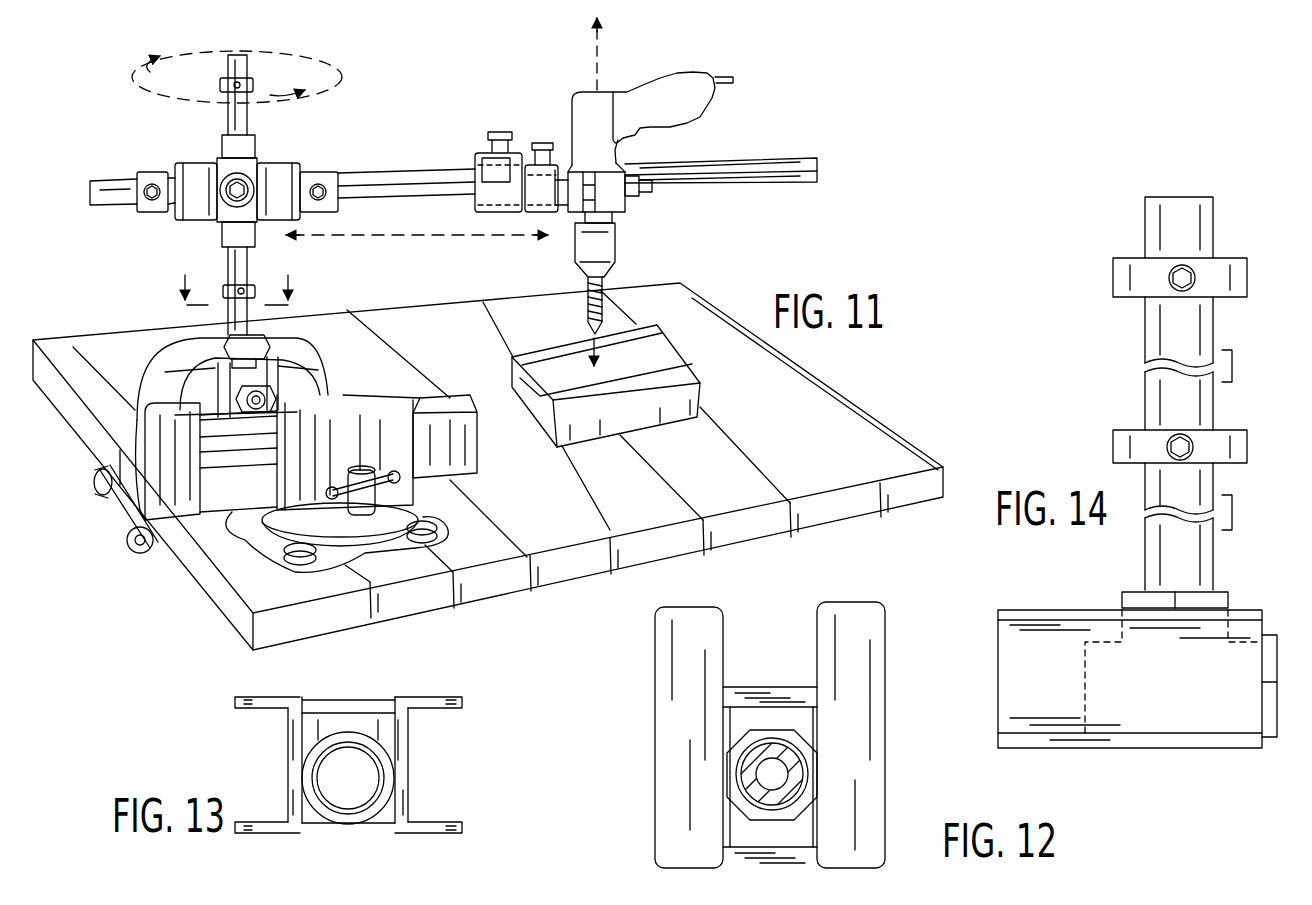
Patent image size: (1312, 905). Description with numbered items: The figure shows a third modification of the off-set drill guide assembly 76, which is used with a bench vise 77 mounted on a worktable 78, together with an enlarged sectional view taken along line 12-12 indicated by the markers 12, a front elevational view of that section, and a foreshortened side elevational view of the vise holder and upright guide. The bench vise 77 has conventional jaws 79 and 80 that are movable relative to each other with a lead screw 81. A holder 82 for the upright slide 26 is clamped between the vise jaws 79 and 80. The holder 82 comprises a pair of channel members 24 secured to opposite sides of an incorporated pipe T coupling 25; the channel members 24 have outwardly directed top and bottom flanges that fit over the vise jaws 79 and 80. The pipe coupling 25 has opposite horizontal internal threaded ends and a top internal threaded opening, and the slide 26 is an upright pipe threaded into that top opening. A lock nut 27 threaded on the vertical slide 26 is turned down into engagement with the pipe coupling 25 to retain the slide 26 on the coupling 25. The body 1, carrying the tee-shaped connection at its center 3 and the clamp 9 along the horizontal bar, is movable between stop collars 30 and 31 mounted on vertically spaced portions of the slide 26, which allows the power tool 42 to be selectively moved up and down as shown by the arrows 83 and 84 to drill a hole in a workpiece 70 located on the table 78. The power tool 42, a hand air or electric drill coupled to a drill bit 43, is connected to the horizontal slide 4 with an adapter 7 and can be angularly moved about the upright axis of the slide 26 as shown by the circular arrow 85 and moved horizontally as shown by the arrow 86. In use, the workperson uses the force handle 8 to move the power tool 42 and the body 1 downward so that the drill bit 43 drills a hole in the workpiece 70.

In FIG. 11, the body 1 is at (202, 175).
In FIG. 11, the tee body 3 is at (252, 153).
In FIG. 11, the horizontal slide 4 is at (408, 186).
In FIG. 11, the adapter 7 is at (630, 198).
In FIG. 11, the force handle 8 is at (795, 172).
In FIG. 11, the clamp 9 is at (478, 166).
In FIG. 11, the line 12- 12 is at (231, 278).
In FIG. 13, the channel members 24 is at (410, 836).
In FIG. 12, the channel members 24 is at (828, 630).
In FIG. 14, the channel members 24 is at (1045, 637).
In FIG. 13, the pipe T coupling 25 is at (335, 718).
In FIG. 12, the pipe T coupling 25 is at (765, 836).
In FIG. 14, the pipe T coupling 25 is at (1175, 722).
In FIG. 11, the upright slide 26 is at (243, 66).
In FIG. 12, the upright slide 26 is at (795, 765).
In FIG. 14, the upright slide 26 is at (1155, 238).
In FIG. 11, the lock nut 27 is at (262, 340).
In FIG. 12, the lock nut 27 is at (805, 795).
In FIG. 14, the lock nut 27 is at (1222, 602).
In FIG. 11, the stop collar 30 is at (228, 291).
In FIG. 14, the stop collar 30 is at (1127, 437).
In FIG. 11, the stop collar 31 is at (224, 80).
In FIG. 14, the stop collar 31 is at (1130, 285).
In FIG. 11, the power tool 42 is at (582, 118).
In FIG. 11, the drill bit 43 is at (597, 307).
In FIG. 11, the workpiece 70 is at (583, 432).
In FIG. 11, the off-set drill guide assembly 76 is at (352, 152).
In FIG. 11, the bench vise 77 is at (402, 396).
In FIG. 11, the worktable 78 is at (727, 337).
In FIG. 11, the vise jaw 79 is at (205, 387).
In FIG. 11, the vise jaw 80 is at (303, 382).
In FIG. 11, the lead screw 81 is at (103, 489).
In FIG. 11, the holder 82 is at (175, 330).
In FIG. 13, the holder 82 is at (367, 758).
In FIG. 12, the holder 82 is at (791, 733).
In FIG. 14, the holder 82 is at (1137, 660).
In FIG. 11, the arrow 83 is at (597, 345).
In FIG. 11, the arrow 84 is at (600, 56).
In FIG. 11, the circular arrow 85 is at (178, 102).
In FIG. 11, the arrow 86 is at (437, 237).